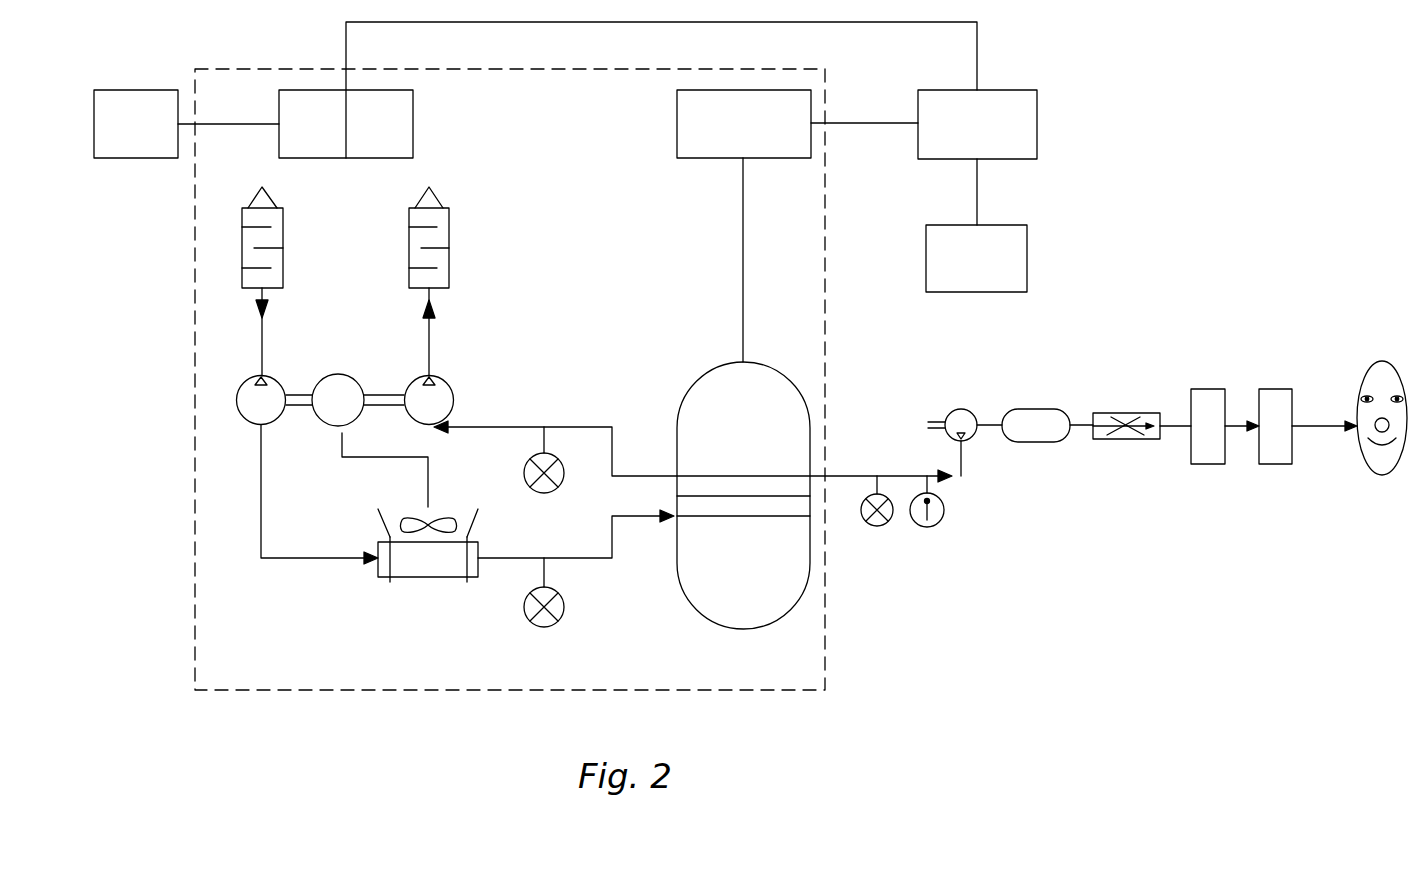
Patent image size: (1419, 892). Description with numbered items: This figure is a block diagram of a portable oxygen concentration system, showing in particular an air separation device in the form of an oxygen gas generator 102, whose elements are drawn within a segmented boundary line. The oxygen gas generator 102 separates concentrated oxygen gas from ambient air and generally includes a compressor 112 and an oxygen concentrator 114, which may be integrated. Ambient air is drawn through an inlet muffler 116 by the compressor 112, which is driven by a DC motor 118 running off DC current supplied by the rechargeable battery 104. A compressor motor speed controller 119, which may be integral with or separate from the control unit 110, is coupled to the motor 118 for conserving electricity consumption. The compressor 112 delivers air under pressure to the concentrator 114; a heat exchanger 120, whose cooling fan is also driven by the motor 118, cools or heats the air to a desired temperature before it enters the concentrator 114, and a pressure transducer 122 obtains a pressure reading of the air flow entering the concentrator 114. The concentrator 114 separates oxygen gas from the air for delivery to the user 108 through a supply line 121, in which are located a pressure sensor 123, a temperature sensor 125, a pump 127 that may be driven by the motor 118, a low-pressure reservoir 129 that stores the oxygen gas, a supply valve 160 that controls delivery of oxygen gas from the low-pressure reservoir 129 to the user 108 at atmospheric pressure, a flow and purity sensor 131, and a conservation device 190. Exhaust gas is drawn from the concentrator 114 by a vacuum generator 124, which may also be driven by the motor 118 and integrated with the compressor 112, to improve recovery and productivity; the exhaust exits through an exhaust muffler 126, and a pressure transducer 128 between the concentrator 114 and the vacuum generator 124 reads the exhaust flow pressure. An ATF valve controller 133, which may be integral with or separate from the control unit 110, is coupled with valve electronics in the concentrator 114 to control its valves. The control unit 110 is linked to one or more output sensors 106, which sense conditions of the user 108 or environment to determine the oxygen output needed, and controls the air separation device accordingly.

The oxygen gas generator 102 is at (788, 690).
The rechargeable battery 104 is at (186, 124).
The output sensor 106 is at (976, 258).
The user 108 is at (1382, 478).
The control unit 110 is at (977, 157).
The compressor 112 is at (240, 383).
The oxygen concentrator 114 is at (743, 495).
The inlet muffler 116 is at (242, 214).
The DC motor 118 is at (322, 380).
The compressor motor speed controller 119 is at (346, 124).
The heat exchanger 120 is at (472, 580).
The supply line 121 is at (1317, 405).
The pressure transducer 122 is at (553, 624).
The pressure sensor 123 is at (870, 526).
The vacuum generator 124 is at (455, 380).
The temperature sensor 125 is at (930, 527).
The exhaust muffler 126 is at (449, 227).
The pump 127 is at (955, 410).
The pressure transducer 128 is at (524, 473).
The low-pressure reservoir 129 is at (1035, 445).
The flow and purity sensor 131 is at (1203, 465).
The ATF valve controller 133 is at (797, 226).
The supply valve 160 is at (1137, 406).
The conservation device 190 is at (1275, 465).